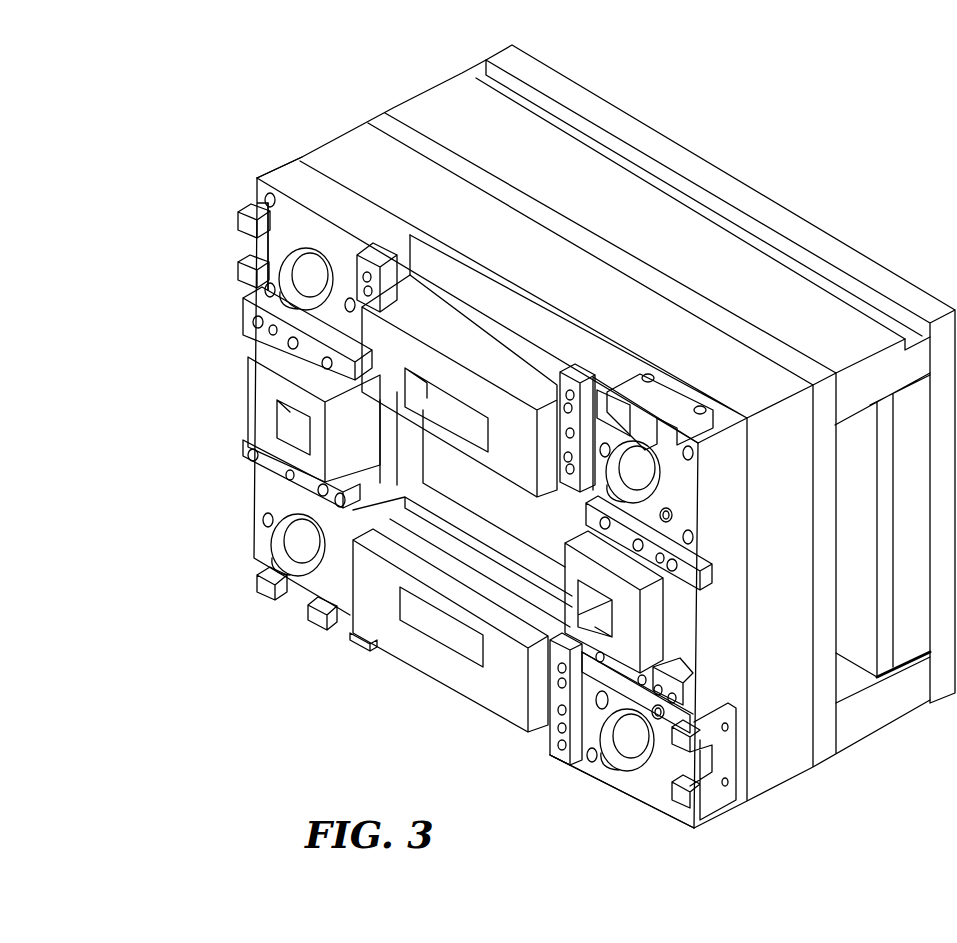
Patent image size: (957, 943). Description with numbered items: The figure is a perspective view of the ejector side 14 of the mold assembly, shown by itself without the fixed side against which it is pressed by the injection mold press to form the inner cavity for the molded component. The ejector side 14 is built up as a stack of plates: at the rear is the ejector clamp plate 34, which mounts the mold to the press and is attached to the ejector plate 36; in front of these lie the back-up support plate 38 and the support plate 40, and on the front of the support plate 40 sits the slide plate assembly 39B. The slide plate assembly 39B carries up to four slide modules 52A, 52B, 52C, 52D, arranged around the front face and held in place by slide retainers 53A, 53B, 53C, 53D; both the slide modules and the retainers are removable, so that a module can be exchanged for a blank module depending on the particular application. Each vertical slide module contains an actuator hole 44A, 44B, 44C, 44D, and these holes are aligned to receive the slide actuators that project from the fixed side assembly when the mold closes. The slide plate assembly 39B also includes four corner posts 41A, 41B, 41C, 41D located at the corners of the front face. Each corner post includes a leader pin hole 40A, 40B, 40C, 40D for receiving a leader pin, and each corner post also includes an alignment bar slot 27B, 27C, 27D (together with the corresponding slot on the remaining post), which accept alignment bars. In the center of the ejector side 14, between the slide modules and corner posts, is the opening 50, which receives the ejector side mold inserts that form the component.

The ejector side 14 is at (305, 48).
The ejector clamp plate 34 is at (510, 50).
The ejector plate 36 is at (427, 92).
The back-up support plate 38 is at (385, 118).
The support plate 40 is at (340, 140).
The slide plate assembly 39B is at (282, 172).
The alignment bar slot 27B is at (240, 212).
The corner post 41B is at (275, 248).
The leader pin hole 40B is at (300, 278).
The slide retainer 53B is at (250, 318).
The slide module 52B is at (265, 382).
The actuator hole 44B is at (290, 410).
The corner post 41C is at (262, 522).
The leader pin hole 40C is at (295, 545).
The alignment bar slot 27C is at (312, 620).
The slide retainer 53C is at (358, 645).
The slide module 52C is at (420, 655).
The actuator hole 44C is at (470, 650).
The opening 50 is at (528, 520).
The slide retainer 53D is at (712, 567).
The leader pin hole 40D is at (627, 747).
The corner post 41D is at (652, 790).
The alignment bar slot 27D is at (725, 765).
The actuator hole 44D is at (700, 647).
The slide module 52D is at (682, 612).
The corner post 41A is at (740, 503).
The leader pin hole 40A is at (728, 497).
The slide retainer 53A is at (385, 250).
The slide module 52A is at (445, 330).
The actuator hole 44A is at (445, 410).